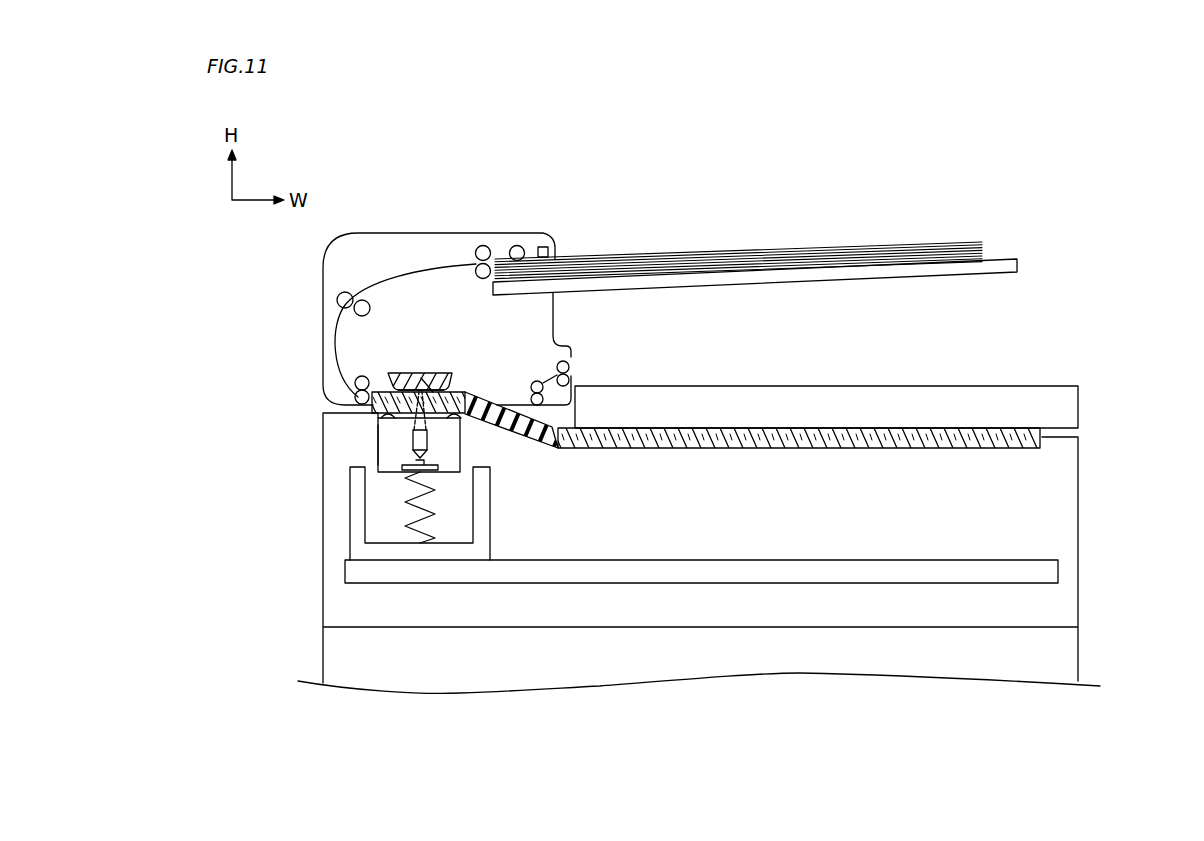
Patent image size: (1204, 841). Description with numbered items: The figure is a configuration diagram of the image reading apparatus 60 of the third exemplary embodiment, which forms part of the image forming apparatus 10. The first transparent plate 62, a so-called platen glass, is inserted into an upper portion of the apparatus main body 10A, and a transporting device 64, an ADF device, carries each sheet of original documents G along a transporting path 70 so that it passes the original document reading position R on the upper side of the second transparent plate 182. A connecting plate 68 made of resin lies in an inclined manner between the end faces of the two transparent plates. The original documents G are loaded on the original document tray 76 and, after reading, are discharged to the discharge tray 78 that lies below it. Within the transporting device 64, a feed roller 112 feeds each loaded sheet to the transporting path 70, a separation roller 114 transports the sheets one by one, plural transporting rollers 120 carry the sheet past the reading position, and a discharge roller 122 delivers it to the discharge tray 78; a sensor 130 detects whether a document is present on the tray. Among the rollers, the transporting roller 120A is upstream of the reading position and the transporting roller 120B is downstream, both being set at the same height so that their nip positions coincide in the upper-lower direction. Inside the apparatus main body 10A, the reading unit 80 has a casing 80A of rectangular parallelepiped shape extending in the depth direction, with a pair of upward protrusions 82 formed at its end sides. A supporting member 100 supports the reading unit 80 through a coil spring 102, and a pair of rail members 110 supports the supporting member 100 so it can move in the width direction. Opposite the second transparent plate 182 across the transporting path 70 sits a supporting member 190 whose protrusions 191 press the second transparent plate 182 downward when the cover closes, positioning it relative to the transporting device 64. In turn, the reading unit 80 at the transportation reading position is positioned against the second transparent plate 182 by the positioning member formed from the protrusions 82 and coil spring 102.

The image forming apparatus 10 is at (735, 421).
The apparatus main body 10A is at (1079, 530).
The image reading apparatus 60 is at (846, 393).
The first transparent plate 62 is at (830, 450).
The transporting device 64 is at (392, 251).
The connecting plate 68 is at (544, 452).
The transporting path 70 is at (434, 272).
The original document tray 76 is at (1004, 273).
The discharge tray 78 is at (1062, 390).
The reading unit 80 is at (400, 408).
The casing 80A is at (377, 448).
The protrusions 82 is at (375, 405).
The supporting member 100 is at (492, 525).
The coil spring 102 is at (436, 518).
The rail members 110 is at (860, 584).
The feed roller 112 is at (518, 245).
The separation roller 114 is at (483, 245).
The transporting rollers 120 is at (337, 300).
The transporting roller 120A is at (362, 376).
The transporting roller 120B is at (537, 380).
The discharge roller 122 is at (567, 360).
The sensor 130 is at (546, 246).
The second transparent plate 182 is at (373, 393).
The supporting member 190 is at (420, 371).
The protrusion 191 is at (417, 395).
The original document G is at (835, 248).
The original document reading position R is at (433, 391).